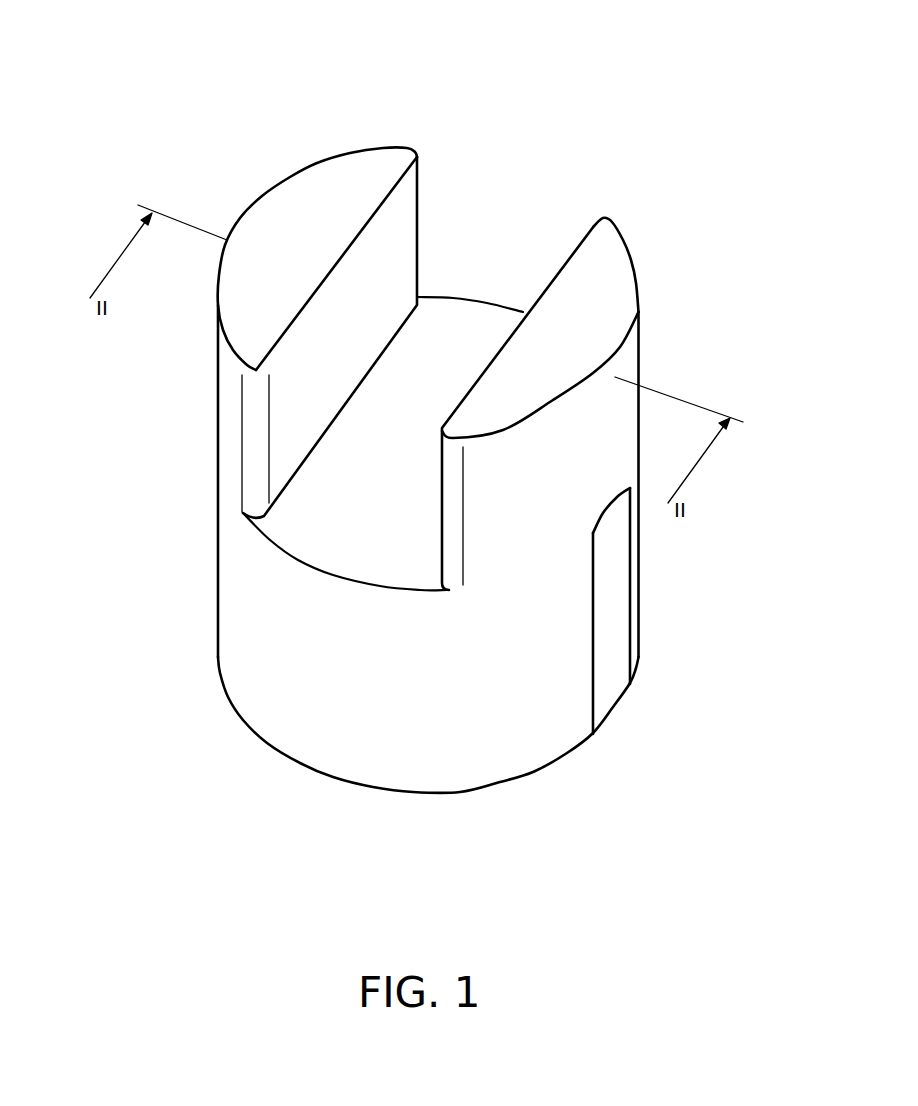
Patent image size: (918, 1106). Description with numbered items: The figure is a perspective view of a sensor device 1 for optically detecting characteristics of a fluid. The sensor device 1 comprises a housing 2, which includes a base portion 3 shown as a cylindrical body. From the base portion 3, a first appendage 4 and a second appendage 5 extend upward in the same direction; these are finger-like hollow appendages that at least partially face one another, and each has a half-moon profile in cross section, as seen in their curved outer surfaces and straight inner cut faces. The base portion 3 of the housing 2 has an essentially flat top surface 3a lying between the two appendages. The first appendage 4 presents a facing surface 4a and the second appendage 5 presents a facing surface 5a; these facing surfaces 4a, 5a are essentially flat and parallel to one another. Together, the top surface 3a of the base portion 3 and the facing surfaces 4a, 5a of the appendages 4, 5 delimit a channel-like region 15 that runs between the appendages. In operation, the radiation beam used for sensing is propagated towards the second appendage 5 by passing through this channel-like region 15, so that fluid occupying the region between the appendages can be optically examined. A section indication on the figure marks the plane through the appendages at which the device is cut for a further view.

The sensor device 1 is at (378, 434).
The housing 2 is at (378, 455).
The base portion 3 is at (513, 728).
The top surface 3a is at (475, 328).
The first appendage 4 is at (277, 290).
The facing surface of first appendage 4a is at (320, 380).
The second appendage 5 is at (408, 375).
The facing surface of second appendage 5a is at (438, 482).
The channel-like region 15 is at (457, 281).